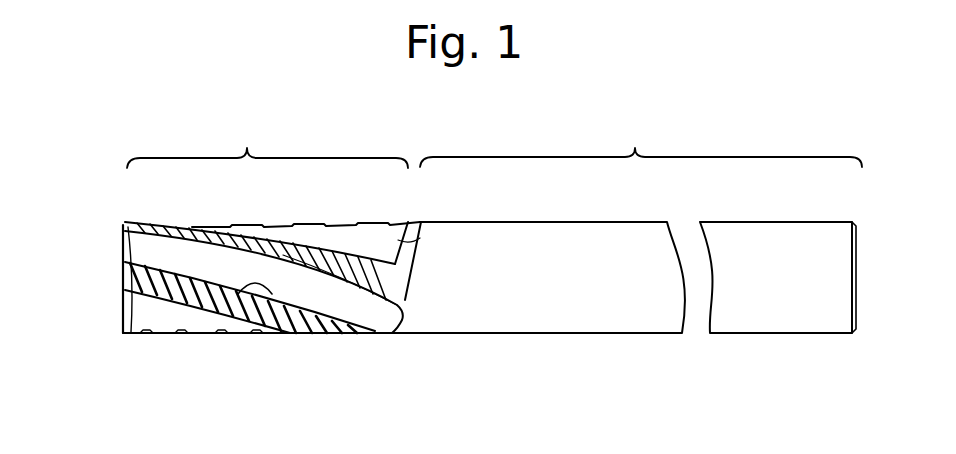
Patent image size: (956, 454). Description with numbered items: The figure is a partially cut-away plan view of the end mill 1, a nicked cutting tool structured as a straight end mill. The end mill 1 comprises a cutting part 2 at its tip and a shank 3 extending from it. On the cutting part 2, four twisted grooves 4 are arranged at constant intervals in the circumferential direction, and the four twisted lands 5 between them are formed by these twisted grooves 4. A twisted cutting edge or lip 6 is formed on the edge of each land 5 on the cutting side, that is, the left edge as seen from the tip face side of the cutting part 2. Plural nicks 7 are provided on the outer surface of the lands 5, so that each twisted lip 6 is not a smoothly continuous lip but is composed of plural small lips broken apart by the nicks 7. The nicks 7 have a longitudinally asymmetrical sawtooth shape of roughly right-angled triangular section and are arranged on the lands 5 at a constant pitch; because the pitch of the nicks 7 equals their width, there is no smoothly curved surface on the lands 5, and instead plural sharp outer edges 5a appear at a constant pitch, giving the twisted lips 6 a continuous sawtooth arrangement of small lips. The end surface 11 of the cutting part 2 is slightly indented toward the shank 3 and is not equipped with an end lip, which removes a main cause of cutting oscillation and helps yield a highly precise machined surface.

The end mill 1 is at (625, 354).
The cutting part 2 is at (267, 145).
The shank 3 is at (218, 415).
The twisted grooves 4 is at (413, 247).
The twisted lands 5 is at (343, 224).
The sharp outer edges 5a is at (210, 320).
The twisted cutting edge or lip 6 is at (266, 300).
The nicks 7 is at (207, 228).
The end surface 11 is at (123, 307).